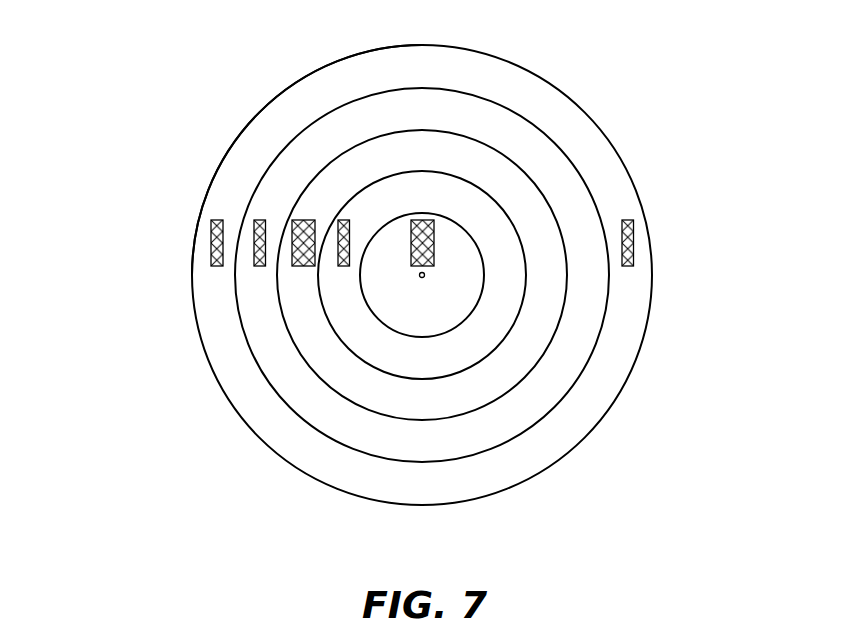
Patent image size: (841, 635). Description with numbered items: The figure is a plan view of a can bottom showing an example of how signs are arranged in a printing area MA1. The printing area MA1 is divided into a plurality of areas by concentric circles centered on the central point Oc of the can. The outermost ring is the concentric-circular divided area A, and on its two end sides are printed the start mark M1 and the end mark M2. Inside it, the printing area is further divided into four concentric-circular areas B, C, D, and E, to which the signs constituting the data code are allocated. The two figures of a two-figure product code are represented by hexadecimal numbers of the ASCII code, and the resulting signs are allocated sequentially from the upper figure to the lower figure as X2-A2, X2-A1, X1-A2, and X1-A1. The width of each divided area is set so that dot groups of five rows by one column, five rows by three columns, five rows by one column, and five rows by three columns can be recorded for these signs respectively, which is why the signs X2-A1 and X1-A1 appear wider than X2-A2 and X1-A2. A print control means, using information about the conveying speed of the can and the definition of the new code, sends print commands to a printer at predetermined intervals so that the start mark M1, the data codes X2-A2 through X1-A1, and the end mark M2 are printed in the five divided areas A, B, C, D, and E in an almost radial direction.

The outermost concentric-circular divided area A is at (422, 275).
The concentric-circular divided area B is at (422, 275).
The concentric-circular divided area C is at (422, 275).
The concentric-circular divided area D is at (422, 275).
The concentric-circular divided area E is at (422, 275).
The central point of the can Oc is at (419, 280).
The start mark M1 is at (207, 242).
The end mark M2 is at (635, 231).
The printing area MA1 is at (191, 247).
The data code sign X1-A1 is at (425, 217).
The data code sign X1-A2 is at (349, 215).
The data code sign X2-A1 is at (308, 205).
The data code sign X2-A2 is at (263, 203).